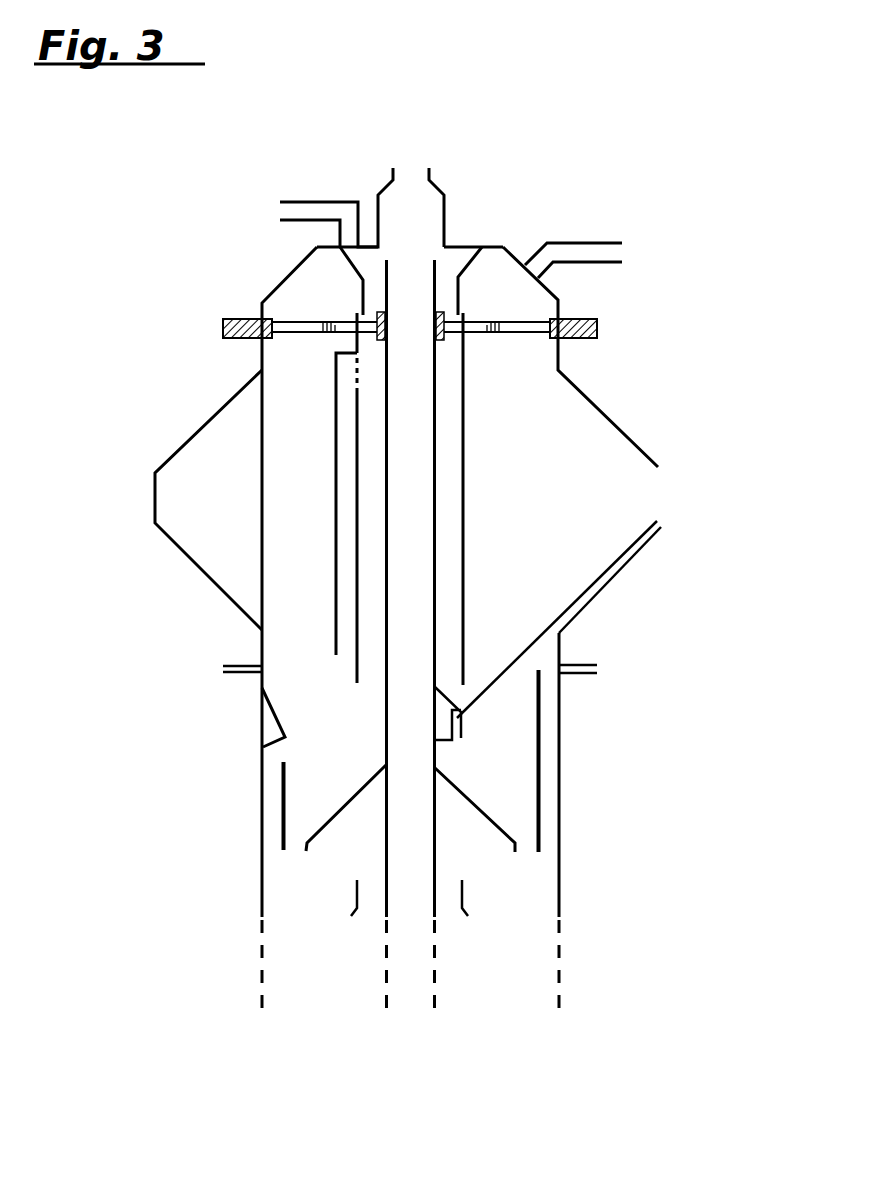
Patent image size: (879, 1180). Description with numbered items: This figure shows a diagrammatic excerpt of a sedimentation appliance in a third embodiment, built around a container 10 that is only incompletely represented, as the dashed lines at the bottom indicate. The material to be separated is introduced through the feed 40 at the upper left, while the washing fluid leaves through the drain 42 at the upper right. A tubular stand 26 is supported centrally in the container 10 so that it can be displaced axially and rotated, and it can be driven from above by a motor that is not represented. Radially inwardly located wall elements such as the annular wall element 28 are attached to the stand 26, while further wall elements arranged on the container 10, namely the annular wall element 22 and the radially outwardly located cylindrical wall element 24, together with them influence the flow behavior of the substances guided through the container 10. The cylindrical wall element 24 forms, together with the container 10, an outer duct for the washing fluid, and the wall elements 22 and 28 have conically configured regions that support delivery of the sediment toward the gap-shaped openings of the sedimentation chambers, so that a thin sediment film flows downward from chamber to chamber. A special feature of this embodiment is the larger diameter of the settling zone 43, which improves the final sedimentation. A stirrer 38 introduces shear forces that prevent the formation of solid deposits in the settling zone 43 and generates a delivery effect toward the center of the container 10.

The container 10 is at (662, 390).
The annular wall element 22 is at (272, 738).
The radially outwardly located cylindrical wall element 24 is at (282, 788).
The stand 26 is at (436, 862).
The annular wall element 28 is at (312, 832).
The stirrer 38 is at (478, 702).
The feed 40 is at (312, 206).
The drain 42 is at (580, 248).
The settling zone 43 is at (228, 455).